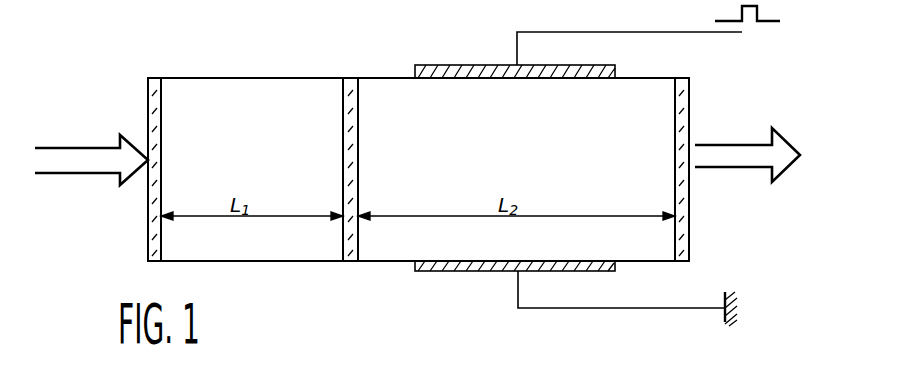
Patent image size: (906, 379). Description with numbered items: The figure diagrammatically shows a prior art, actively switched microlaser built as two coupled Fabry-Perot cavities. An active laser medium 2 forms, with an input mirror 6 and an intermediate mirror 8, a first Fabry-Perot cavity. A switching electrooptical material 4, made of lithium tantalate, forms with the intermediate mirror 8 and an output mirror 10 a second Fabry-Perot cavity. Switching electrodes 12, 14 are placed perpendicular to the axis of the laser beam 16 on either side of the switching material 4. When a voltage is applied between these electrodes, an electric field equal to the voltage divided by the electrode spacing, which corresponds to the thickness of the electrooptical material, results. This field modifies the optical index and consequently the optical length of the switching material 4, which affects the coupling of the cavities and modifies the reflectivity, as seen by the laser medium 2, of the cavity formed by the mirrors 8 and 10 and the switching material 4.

The active laser medium 2 is at (232, 86).
The switching electrooptical material 4 is at (385, 250).
The input mirror 6 is at (150, 95).
The intermediate mirror 8 is at (351, 88).
The output mirror 10 is at (683, 115).
The switching electrode 12 is at (487, 269).
The switching electrode 14 is at (470, 66).
The laser beam 16 is at (731, 163).